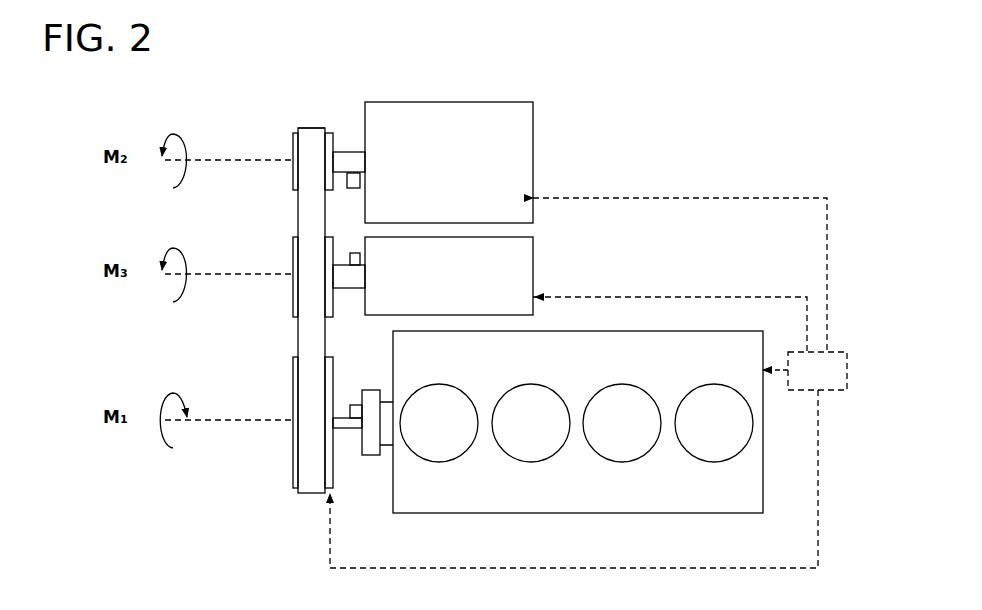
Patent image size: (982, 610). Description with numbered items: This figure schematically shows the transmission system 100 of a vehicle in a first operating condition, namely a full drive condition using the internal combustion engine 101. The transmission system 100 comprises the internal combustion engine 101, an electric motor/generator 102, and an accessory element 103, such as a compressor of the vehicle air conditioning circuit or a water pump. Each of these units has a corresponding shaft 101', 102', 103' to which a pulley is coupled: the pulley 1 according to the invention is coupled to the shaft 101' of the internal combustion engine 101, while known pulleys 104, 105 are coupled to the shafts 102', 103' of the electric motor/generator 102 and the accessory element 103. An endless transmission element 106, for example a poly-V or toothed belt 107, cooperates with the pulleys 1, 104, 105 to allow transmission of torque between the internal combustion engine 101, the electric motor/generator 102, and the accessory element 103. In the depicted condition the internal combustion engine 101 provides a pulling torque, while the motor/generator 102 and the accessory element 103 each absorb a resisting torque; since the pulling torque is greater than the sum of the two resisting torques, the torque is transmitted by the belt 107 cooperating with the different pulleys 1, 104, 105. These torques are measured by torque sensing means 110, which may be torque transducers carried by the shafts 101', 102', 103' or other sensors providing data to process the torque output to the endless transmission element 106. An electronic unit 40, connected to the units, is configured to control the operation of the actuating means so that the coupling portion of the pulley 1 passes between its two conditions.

The pulley 1 is at (283, 486).
The electronic unit 40 is at (847, 370).
The transmission system 100 is at (832, 152).
The internal combustion engine 101 is at (592, 388).
The shaft 101' is at (365, 468).
The electric motor/generator 102 is at (475, 143).
The shaft 102' is at (340, 110).
The accessory element 103 is at (496, 273).
The shaft 103' is at (365, 304).
The pulley 104 is at (294, 257).
The pulley 105 is at (294, 144).
The endless transmission element 106 is at (281, 339).
The belt 107 is at (308, 412).
The torque sensing means 110 is at (353, 189).